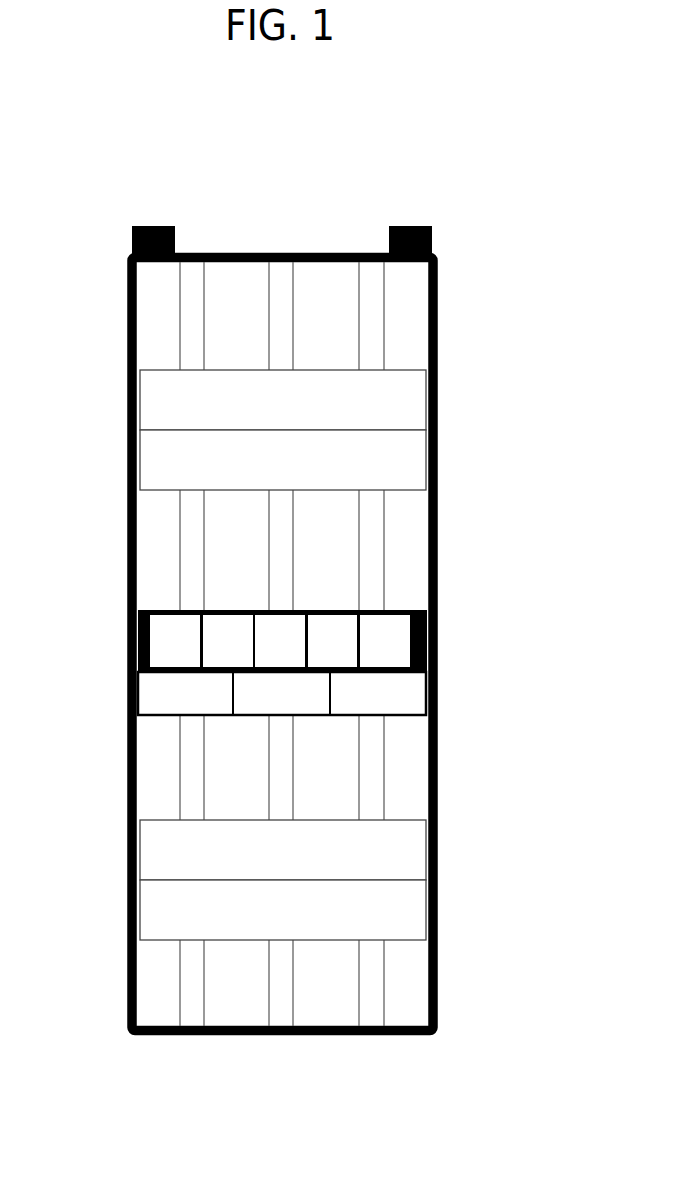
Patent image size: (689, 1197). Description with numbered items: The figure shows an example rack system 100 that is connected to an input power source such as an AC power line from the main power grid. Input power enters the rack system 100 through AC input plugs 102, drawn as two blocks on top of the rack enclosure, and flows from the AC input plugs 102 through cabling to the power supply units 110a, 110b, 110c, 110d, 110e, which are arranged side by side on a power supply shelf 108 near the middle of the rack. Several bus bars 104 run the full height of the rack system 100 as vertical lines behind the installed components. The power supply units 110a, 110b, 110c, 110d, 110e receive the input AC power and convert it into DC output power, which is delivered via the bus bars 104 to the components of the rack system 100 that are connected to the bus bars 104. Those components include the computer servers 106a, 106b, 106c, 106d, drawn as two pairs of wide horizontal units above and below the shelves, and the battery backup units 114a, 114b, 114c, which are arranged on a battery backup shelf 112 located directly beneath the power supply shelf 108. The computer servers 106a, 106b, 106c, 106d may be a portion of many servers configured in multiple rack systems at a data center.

The rack system 100 is at (494, 257).
The AC input plugs 102 is at (155, 210).
The bus bars 104 is at (350, 340).
The computer server 106a is at (283, 400).
The computer server 106b is at (283, 460).
The computer server 106c is at (283, 850).
The computer server 106d is at (283, 910).
The power supply shelf 108 is at (236, 641).
The power supply unit 110a is at (175, 641).
The power supply unit 110b is at (228, 641).
The power supply unit 110c is at (280, 641).
The power supply unit 110d is at (332, 641).
The power supply unit 110e is at (385, 641).
The battery backup shelf 112 is at (236, 693).
The battery backup unit 114a is at (185, 693).
The battery backup unit 114b is at (281, 693).
The battery backup unit 114c is at (378, 693).